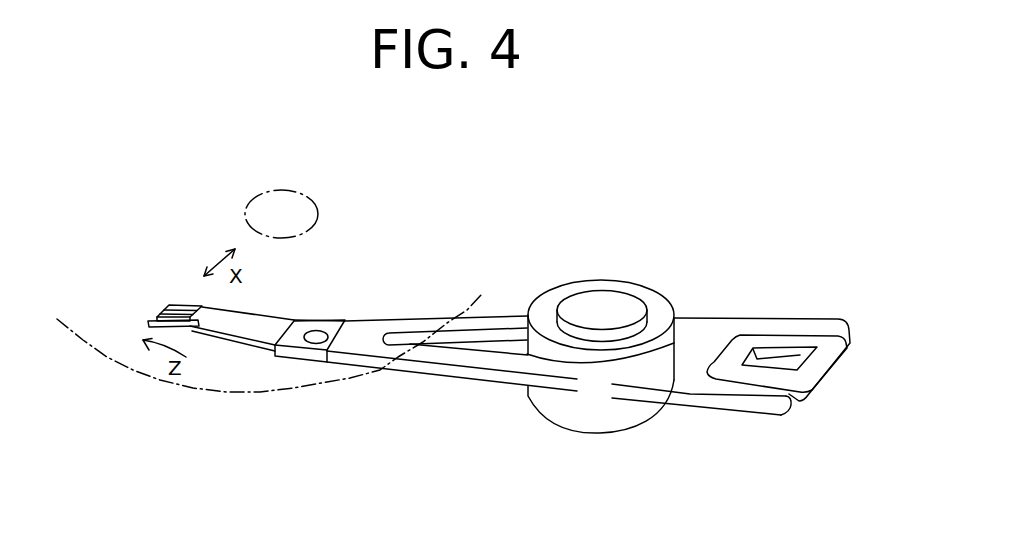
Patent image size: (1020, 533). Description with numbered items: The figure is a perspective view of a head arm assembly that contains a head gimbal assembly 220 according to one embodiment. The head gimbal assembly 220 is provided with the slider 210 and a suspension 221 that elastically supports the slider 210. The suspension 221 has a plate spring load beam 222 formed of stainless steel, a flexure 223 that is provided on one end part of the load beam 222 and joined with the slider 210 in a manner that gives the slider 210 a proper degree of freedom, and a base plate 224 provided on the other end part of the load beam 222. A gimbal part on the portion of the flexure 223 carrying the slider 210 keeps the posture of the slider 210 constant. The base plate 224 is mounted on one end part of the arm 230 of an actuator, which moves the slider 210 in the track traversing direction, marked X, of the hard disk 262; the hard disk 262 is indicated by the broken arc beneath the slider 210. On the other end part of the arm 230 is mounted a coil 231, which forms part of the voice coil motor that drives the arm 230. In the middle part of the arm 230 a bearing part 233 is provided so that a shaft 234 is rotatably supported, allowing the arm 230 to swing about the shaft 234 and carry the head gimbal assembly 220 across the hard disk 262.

The slider 210 is at (178, 304).
The head gimbal assembly 220 is at (263, 359).
The suspension 221 is at (263, 312).
The load beam 222 is at (272, 320).
The flexure 223 is at (150, 320).
The base plate 224 is at (345, 318).
The arm 230 is at (422, 367).
The coil 231 is at (832, 380).
The bearing part 233 is at (546, 298).
The shaft 234 is at (610, 303).
The hard disk 262 is at (188, 390).